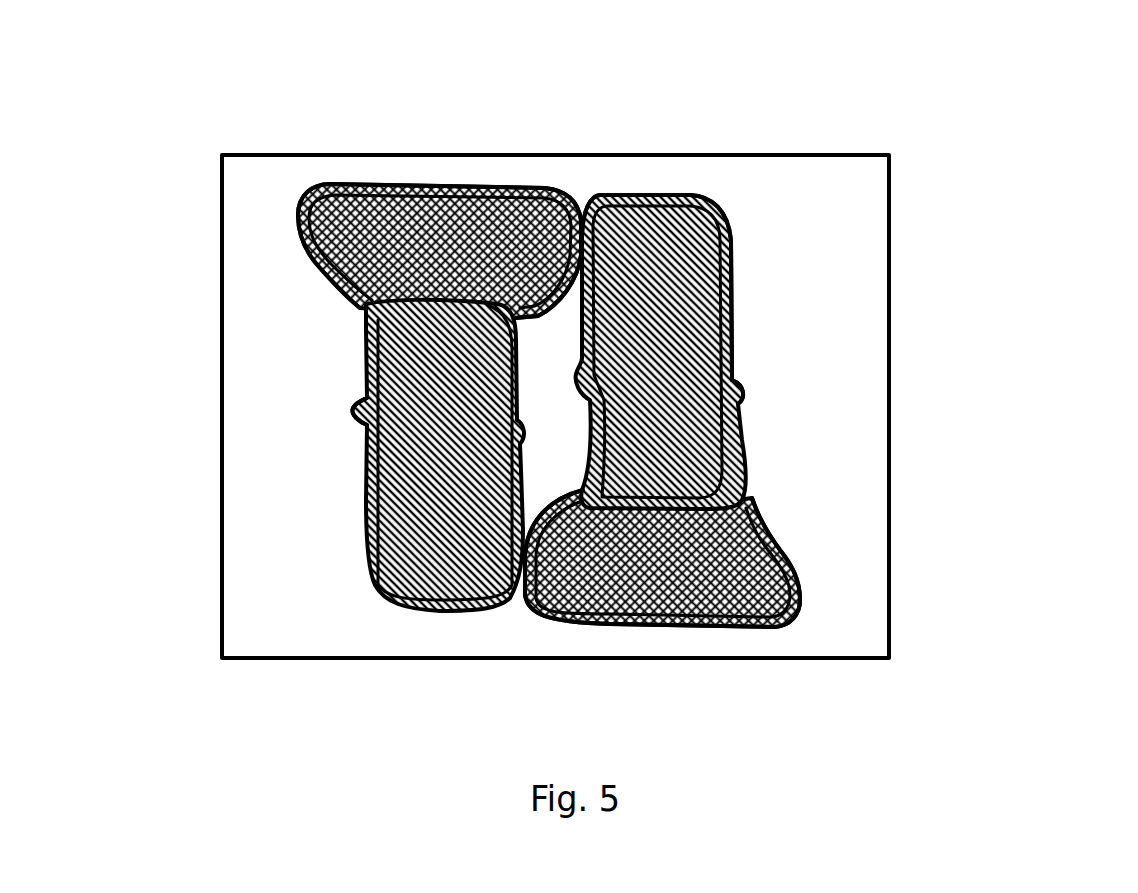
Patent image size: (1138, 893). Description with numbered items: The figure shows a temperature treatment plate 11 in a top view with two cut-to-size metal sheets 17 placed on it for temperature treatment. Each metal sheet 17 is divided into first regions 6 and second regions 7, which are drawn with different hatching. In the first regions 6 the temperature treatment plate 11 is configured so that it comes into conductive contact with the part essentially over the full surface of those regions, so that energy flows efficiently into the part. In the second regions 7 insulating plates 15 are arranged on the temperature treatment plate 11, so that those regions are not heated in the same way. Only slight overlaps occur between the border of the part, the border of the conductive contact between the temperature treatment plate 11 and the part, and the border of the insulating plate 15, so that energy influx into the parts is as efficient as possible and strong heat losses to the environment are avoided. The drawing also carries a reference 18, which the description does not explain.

The temperature treatment plate 11 is at (1017, 220).
The first region 6 is at (662, 270).
The second region 7 is at (455, 228).
The insulating plate 15 is at (299, 200).
The cut-to-size metal sheet 17 is at (352, 410).
The anode current collector 18 is at (735, 270).